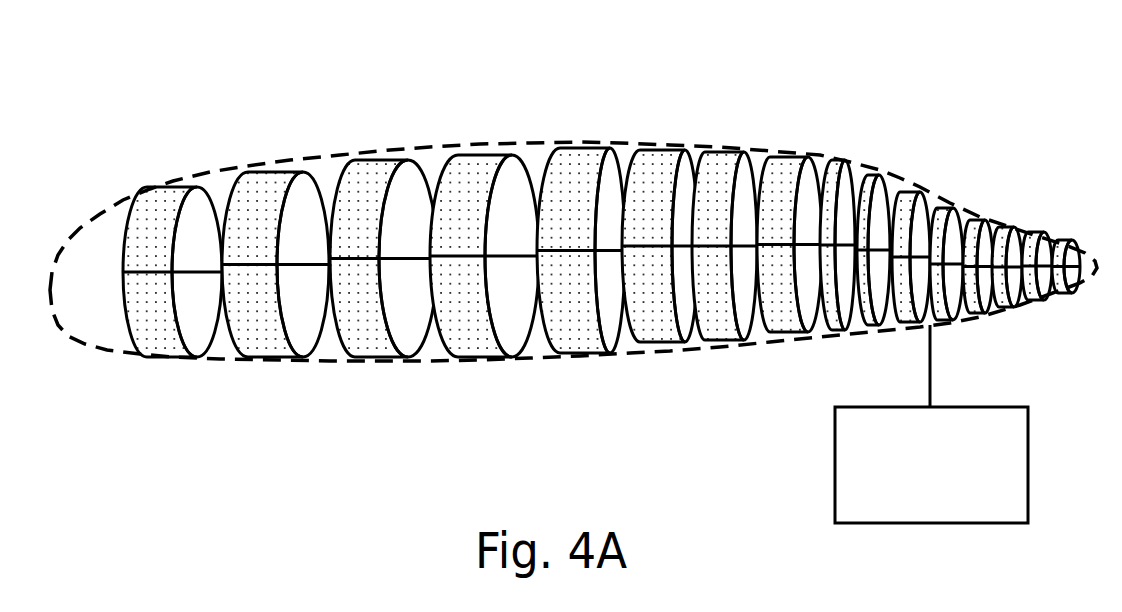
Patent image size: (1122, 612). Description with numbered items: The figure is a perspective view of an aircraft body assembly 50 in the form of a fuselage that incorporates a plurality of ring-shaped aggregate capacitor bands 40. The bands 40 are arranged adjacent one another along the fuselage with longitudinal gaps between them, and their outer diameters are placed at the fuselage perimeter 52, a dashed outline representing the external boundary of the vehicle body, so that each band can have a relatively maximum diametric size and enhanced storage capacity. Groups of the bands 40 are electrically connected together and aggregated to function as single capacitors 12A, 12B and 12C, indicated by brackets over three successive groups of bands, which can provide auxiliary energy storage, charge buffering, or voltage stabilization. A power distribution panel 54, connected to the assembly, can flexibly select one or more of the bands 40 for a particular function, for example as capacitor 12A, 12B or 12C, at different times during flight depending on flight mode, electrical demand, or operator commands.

The capacitor 12A is at (323, 271).
The capacitor 12B is at (815, 126).
The capacitor 12C is at (950, 224).
The aggregate capacitor band 40 is at (261, 348).
The aircraft body assembly 50 is at (594, 224).
The fuselage perimeter 52 is at (61, 230).
The power distribution panel 54 is at (1030, 444).